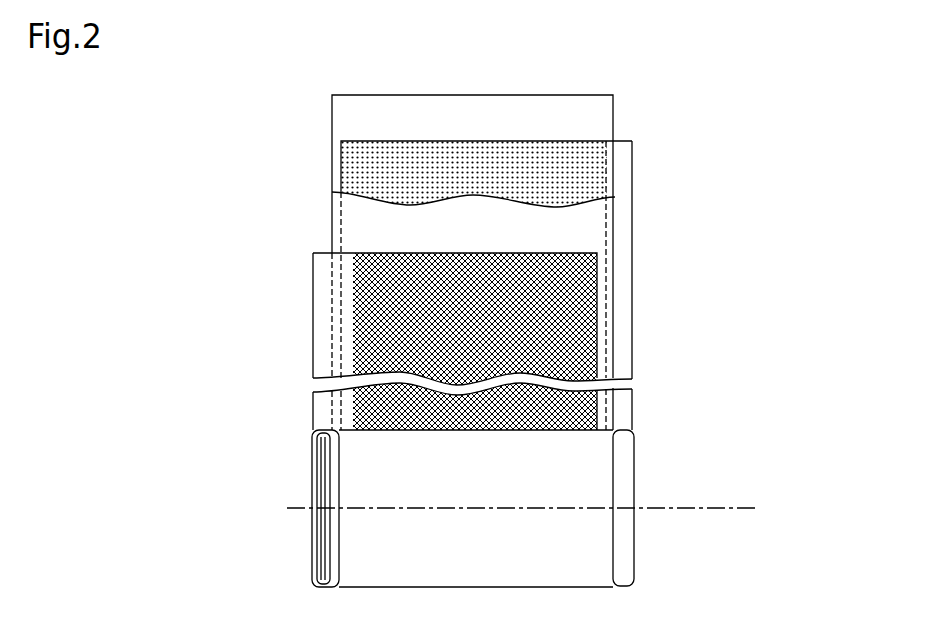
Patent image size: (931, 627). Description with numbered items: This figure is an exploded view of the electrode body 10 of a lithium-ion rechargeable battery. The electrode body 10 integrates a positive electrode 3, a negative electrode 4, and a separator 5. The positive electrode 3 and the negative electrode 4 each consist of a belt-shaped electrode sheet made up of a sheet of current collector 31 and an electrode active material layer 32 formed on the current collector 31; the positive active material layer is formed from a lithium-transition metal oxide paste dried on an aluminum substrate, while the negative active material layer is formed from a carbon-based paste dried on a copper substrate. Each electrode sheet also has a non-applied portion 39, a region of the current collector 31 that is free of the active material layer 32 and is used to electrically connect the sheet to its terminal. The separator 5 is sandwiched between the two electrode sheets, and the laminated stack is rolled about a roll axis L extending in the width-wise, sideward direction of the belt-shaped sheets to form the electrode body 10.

The positive electrode 3 is at (295, 247).
The negative electrode 4 is at (637, 140).
The separator 5 is at (341, 119).
The electrode body 10 is at (737, 535).
The current collector 31 is at (313, 263).
The electrode active material layer 32 is at (362, 302).
The non-applied portion 39 is at (321, 345).
The roll axis L is at (730, 508).